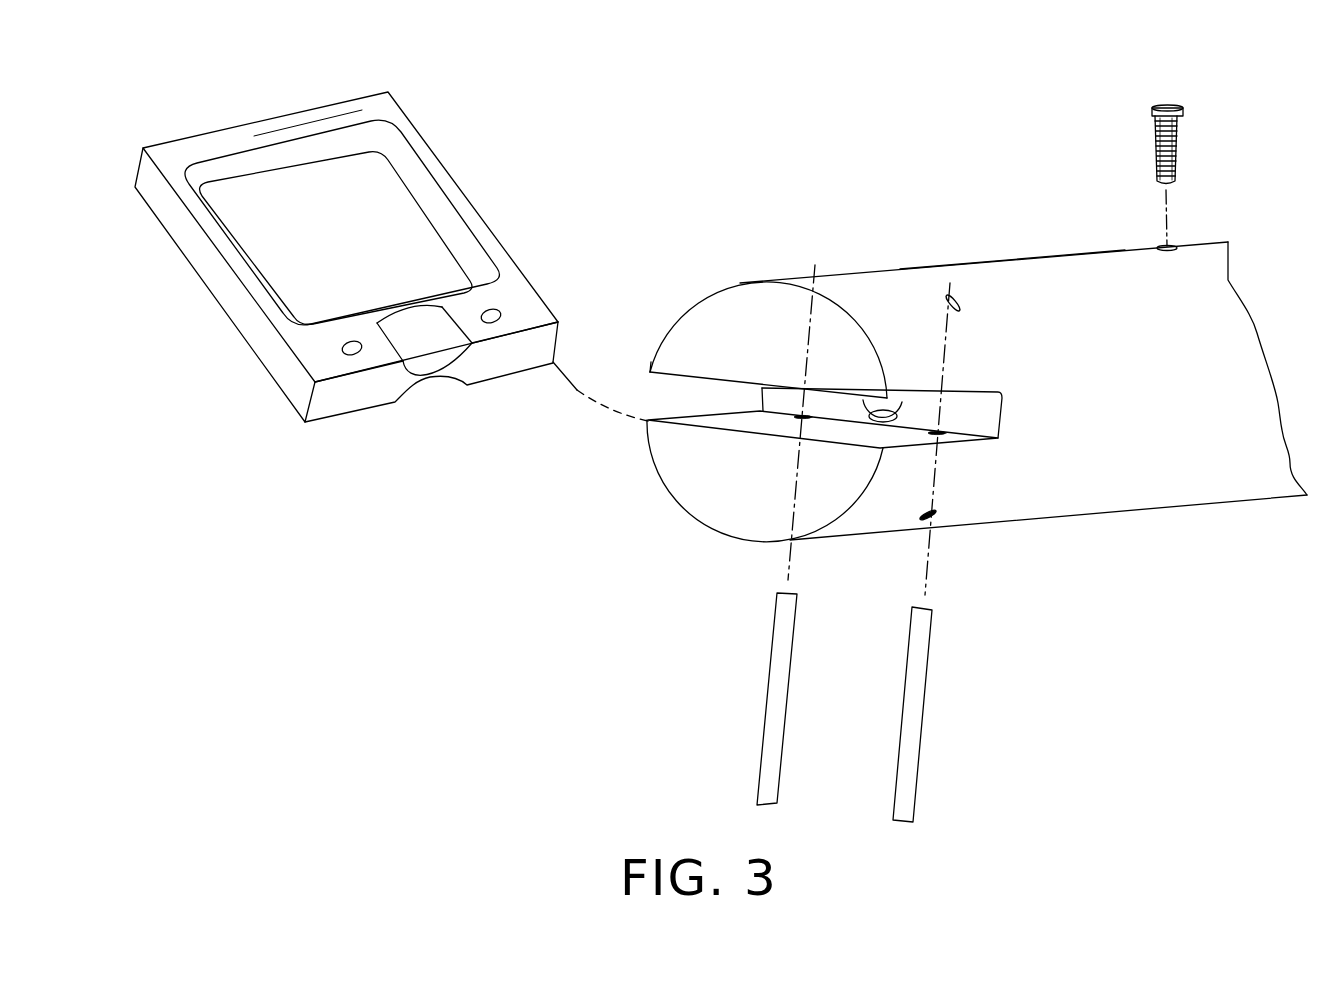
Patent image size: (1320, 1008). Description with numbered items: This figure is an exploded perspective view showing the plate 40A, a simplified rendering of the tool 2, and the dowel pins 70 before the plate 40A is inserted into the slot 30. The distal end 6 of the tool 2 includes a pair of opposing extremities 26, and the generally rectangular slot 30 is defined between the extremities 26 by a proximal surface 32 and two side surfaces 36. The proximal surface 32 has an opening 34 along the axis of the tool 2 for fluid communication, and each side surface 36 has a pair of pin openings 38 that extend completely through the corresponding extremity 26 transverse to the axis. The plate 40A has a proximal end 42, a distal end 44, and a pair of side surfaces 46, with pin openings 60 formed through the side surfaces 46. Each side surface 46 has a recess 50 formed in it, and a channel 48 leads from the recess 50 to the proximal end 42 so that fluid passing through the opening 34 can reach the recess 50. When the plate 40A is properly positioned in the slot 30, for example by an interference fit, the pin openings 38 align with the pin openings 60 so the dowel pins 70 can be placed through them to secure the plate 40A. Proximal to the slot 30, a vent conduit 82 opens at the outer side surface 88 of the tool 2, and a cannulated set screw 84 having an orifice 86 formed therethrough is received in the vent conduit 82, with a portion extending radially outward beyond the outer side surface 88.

The tool 2 is at (992, 145).
The distal end 6 is at (694, 286).
The extremity 26 is at (745, 510).
The slot 30 is at (655, 400).
The proximal surface 32 is at (1003, 430).
The opening 34 is at (866, 422).
The side surface 36 is at (767, 427).
The pin opening 38 is at (957, 303).
The plate 40A is at (216, 110).
The proximal end 42 is at (330, 402).
The distal end 44 is at (272, 117).
The side surface 46 is at (303, 342).
The channel 48 is at (420, 347).
The recess 50 is at (352, 251).
The pin opening 60 is at (503, 313).
The dowel pin 70 is at (915, 733).
The vent conduit 82 is at (1172, 245).
The cannulated set screw 84 is at (1170, 141).
The orifice 86 is at (1161, 107).
The outer side surface 88 is at (1123, 248).